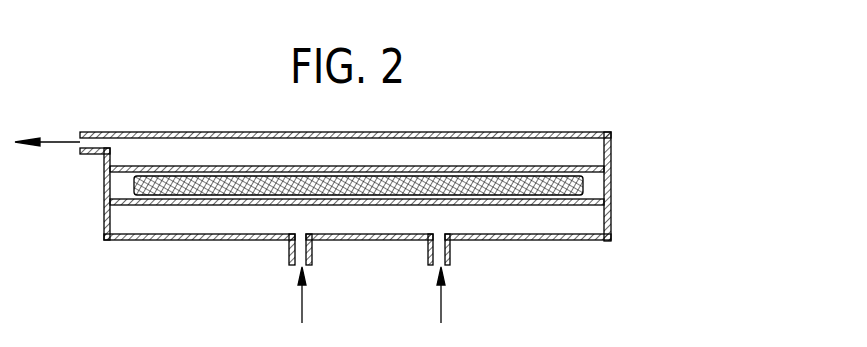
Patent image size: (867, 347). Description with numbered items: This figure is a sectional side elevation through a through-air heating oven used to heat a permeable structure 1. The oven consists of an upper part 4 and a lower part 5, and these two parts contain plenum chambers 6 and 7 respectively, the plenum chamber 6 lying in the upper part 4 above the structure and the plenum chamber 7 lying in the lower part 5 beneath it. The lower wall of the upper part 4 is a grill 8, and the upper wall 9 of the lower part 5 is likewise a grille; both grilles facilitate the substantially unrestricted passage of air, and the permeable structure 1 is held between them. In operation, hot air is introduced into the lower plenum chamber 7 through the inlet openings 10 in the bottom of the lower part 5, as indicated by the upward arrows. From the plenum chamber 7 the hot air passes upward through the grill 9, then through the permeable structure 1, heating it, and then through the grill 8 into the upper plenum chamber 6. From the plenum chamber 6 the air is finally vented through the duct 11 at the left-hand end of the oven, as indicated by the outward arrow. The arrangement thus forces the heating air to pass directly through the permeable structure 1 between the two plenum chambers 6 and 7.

The permeable structure 1 is at (578, 187).
The upper part 4 is at (534, 133).
The lower part 5 is at (531, 240).
The plenum chamber 6 is at (216, 146).
The plenum chamber 7 is at (211, 218).
The grill 8 is at (407, 169).
The upper wall (grill) 9 is at (398, 205).
The inlet 10 is at (315, 255).
The duct 11 is at (82, 132).